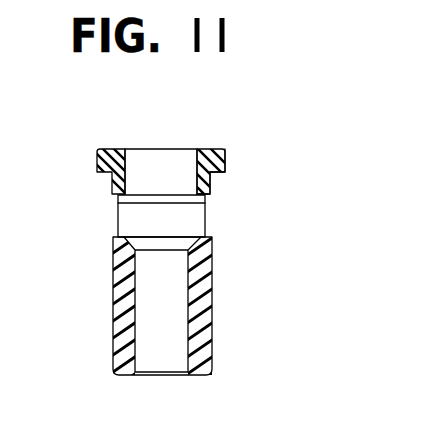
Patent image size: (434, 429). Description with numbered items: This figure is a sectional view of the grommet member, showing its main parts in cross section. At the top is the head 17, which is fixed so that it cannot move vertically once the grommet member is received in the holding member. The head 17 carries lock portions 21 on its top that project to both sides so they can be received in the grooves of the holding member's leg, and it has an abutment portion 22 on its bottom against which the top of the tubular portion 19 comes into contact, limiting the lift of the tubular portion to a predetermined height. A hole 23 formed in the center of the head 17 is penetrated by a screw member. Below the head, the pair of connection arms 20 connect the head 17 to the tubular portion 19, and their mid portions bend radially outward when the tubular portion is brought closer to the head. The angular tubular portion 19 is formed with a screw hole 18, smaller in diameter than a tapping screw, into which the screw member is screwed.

The head 17 is at (106, 149).
The hole 18 is at (150, 355).
The tubular portion 19 is at (113, 305).
The connection arms 20 is at (117, 228).
The lock portions 21 is at (250, 100).
The abutment portion 22 is at (210, 186).
The hole 23 is at (145, 163).